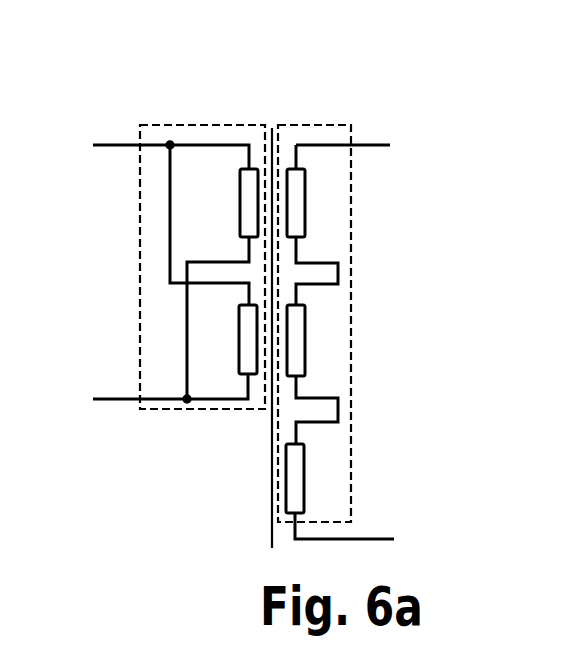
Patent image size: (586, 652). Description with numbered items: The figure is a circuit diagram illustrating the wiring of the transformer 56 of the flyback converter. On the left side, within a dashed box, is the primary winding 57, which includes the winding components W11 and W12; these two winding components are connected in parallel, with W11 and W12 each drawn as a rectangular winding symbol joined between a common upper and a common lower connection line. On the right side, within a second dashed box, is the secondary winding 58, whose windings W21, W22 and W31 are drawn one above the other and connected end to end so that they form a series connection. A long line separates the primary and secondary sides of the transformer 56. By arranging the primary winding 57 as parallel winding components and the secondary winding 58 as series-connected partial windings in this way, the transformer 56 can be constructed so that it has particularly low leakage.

The transformer 56 is at (255, 88).
The primary winding 57 is at (187, 125).
The secondary winding 58 is at (317, 125).
The winding component W11 is at (247, 204).
The winding component W12 is at (247, 342).
The winding W21 is at (292, 206).
The winding W22 is at (292, 340).
The resistor W31 is at (290, 479).